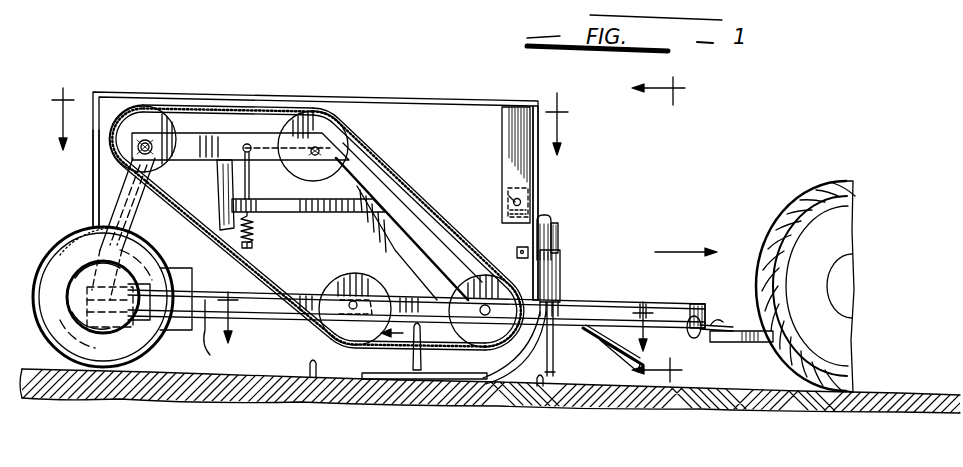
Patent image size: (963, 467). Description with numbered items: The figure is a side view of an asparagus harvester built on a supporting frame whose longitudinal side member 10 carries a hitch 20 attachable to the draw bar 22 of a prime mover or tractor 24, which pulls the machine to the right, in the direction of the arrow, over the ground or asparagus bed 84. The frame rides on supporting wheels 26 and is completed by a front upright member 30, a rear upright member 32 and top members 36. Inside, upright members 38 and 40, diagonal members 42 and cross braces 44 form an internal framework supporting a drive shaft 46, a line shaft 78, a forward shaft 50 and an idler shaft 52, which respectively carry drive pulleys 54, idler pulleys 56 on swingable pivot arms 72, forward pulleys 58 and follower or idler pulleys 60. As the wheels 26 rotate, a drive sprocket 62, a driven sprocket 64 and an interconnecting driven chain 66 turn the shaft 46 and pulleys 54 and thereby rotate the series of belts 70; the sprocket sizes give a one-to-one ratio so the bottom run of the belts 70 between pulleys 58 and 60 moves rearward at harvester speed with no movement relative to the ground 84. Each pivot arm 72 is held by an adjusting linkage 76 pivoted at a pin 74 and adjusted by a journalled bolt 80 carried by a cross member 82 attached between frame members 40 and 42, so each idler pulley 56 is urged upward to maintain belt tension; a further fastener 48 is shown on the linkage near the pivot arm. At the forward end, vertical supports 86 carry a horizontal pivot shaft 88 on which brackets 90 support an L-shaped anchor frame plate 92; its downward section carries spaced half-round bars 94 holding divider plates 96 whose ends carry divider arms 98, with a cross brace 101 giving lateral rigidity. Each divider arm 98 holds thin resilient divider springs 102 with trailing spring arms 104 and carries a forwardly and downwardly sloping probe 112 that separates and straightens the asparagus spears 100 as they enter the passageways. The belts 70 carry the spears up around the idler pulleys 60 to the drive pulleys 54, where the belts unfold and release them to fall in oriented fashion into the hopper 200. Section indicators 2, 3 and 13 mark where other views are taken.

The longitudinal side member 10 is at (617, 317).
The section line 13 is at (670, 225).
The section line 2- 2 is at (313, 116).
The section line 3- 3 is at (440, 321).
The hitch 20 is at (697, 310).
The draw bar 22 is at (762, 343).
The prime mover or tractor 24 is at (780, 225).
The supporting wheels 26 is at (54, 340).
The front upright member 30 is at (535, 168).
The rear upright member 32 is at (96, 182).
The top members 36 is at (465, 96).
The upright member 38 is at (140, 196).
The upright member 40 is at (222, 204).
The diagonal member 42 is at (370, 224).
The cross brace 44 is at (222, 132).
The drive shaft 46 is at (138, 149).
The adjusting bolt 48 is at (321, 153).
The forward shaft 50 is at (497, 275).
The idler shaft 52 is at (340, 316).
The drive pulleys 54 is at (160, 122).
The idler pulley 56 is at (322, 124).
The forward pulleys 58 is at (482, 342).
The follower or idler pulleys 60 is at (342, 330).
The drive sprocket 62 is at (153, 341).
The driven sprocket 64 is at (118, 122).
The driven chain 66 is at (112, 213).
The belts 70 is at (413, 192).
The pivot arm 72 is at (290, 108).
The pin 74 is at (240, 160).
The adjusting linkage 76 is at (271, 212).
The line shaft 78 is at (251, 162).
The journalled bolt 80 is at (258, 232).
The cross member 82 is at (322, 216).
The ground or asparagus bed 84 is at (141, 395).
The vertical supports 86 is at (506, 127).
The horizontal pivot shaft 88 is at (521, 202).
The bracket 90 is at (505, 185).
The anchor frame plate 92 is at (550, 219).
The half-round bars 94 is at (560, 240).
The divider plates 96 is at (558, 290).
The divider arm 98 is at (553, 350).
The asparagus spears 100 is at (413, 358).
The cross brace 101 is at (663, 254).
The divider springs 102 is at (523, 345).
The spring arms 104 is at (490, 382).
The probe 112 is at (627, 357).
The hopper 200 is at (205, 312).